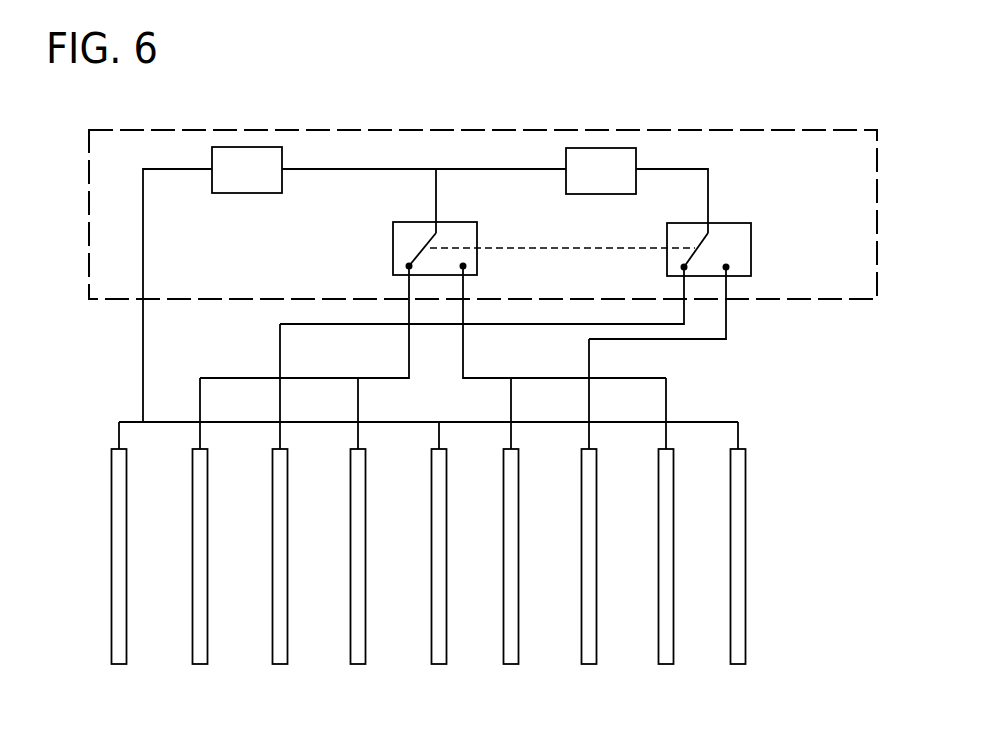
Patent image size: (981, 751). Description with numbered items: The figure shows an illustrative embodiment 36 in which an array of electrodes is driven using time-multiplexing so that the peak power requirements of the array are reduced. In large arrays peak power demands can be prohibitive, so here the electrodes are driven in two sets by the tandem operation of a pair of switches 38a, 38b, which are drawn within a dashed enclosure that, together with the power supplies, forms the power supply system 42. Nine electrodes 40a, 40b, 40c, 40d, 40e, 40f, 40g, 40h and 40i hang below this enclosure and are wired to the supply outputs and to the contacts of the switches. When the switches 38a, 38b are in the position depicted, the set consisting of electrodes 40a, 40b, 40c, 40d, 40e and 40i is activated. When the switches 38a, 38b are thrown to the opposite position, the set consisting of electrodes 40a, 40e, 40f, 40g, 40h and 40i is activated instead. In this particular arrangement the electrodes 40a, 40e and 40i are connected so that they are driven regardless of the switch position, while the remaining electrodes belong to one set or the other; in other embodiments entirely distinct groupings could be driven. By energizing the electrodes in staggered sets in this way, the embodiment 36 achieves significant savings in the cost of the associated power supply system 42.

The illustrative embodiment 36 is at (777, 96).
The power supply system 42 is at (182, 129).
The switch 38a is at (477, 250).
The switch 38b is at (751, 240).
The electrode 40a is at (119, 664).
The electrode 40b is at (200, 664).
The electrode 40c is at (280, 664).
The electrode 40d is at (358, 664).
The electrode 40e is at (439, 664).
The electrode 40f is at (511, 664).
The electrode 40g is at (589, 664).
The electrode 40h is at (666, 664).
The electrode 40i is at (738, 664).